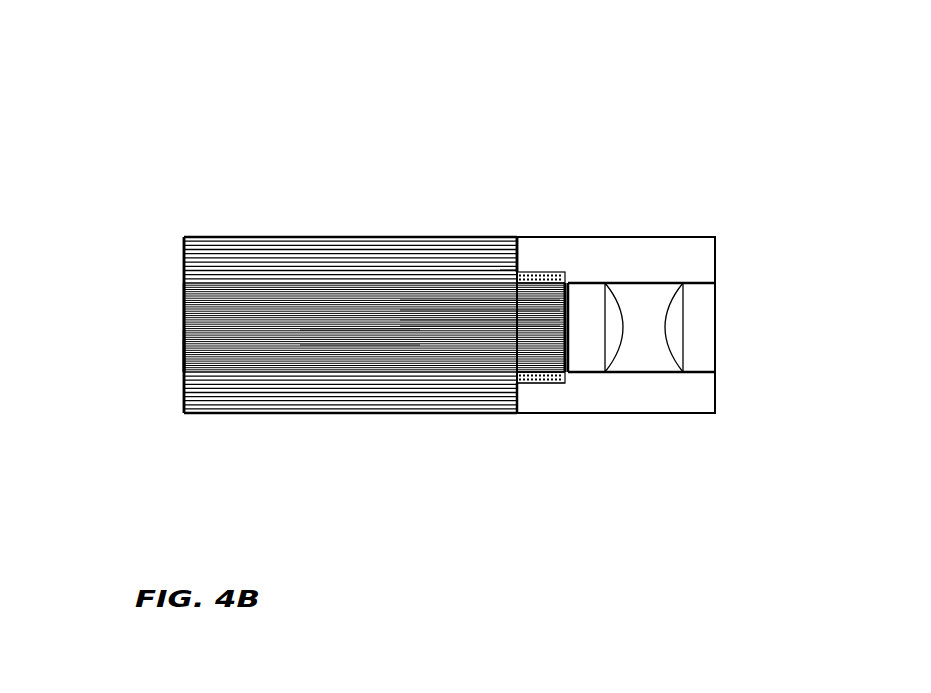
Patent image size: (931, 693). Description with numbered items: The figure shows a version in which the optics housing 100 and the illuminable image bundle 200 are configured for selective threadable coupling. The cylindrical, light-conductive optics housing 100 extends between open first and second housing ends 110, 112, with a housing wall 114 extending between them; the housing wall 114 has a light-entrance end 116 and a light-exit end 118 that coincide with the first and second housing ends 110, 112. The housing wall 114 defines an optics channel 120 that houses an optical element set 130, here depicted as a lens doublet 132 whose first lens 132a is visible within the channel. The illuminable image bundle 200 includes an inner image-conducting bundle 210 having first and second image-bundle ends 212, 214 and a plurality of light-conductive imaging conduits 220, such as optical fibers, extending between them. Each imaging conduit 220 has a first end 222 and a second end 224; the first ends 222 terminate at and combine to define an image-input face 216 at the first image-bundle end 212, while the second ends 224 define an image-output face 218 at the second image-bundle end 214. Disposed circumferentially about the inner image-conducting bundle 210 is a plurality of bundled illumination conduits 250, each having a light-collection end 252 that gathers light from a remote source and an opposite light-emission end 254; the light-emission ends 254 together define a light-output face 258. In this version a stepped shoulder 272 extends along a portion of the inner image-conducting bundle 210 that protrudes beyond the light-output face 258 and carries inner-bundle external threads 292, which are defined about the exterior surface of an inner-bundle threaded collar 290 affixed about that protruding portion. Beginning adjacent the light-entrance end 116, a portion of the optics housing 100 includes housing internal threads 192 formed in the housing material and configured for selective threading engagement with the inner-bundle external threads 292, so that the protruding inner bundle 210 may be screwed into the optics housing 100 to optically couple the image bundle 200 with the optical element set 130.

The optics housing 100 is at (631, 319).
The first housing end 110 is at (527, 237).
The second housing end 112 is at (714, 247).
The housing wall 114 is at (688, 250).
The light-entrance end 116 is at (513, 237).
The light-exit end 118 is at (717, 253).
The optics channel 120 is at (655, 305).
The optical element set 130 is at (672, 455).
The lens doublet 132 is at (672, 420).
The first lens 132a is at (700, 317).
The housing internal threads 192 is at (564, 381).
The illuminable image bundle 200 is at (330, 303).
The inner image-conducting bundle 210 is at (293, 355).
The first image-bundle end 212 is at (563, 343).
The second image-bundle end 214 is at (183, 340).
The image-input face 216 is at (467, 401).
The image-output face 218 is at (183, 356).
The imaging conduit 220 is at (313, 357).
The first end of imaging conduit 222 is at (563, 311).
The second end of imaging conduit 224 is at (183, 349).
The illumination conduit 250 is at (272, 247).
The light-collection end 252 is at (184, 246).
The light-emission end 254 is at (513, 265).
The light-output face 258 is at (513, 257).
The stepped shoulder 272 is at (565, 296).
The inner-bundle threaded collar 290 is at (519, 380).
The inner-bundle external threads 292 is at (512, 373).